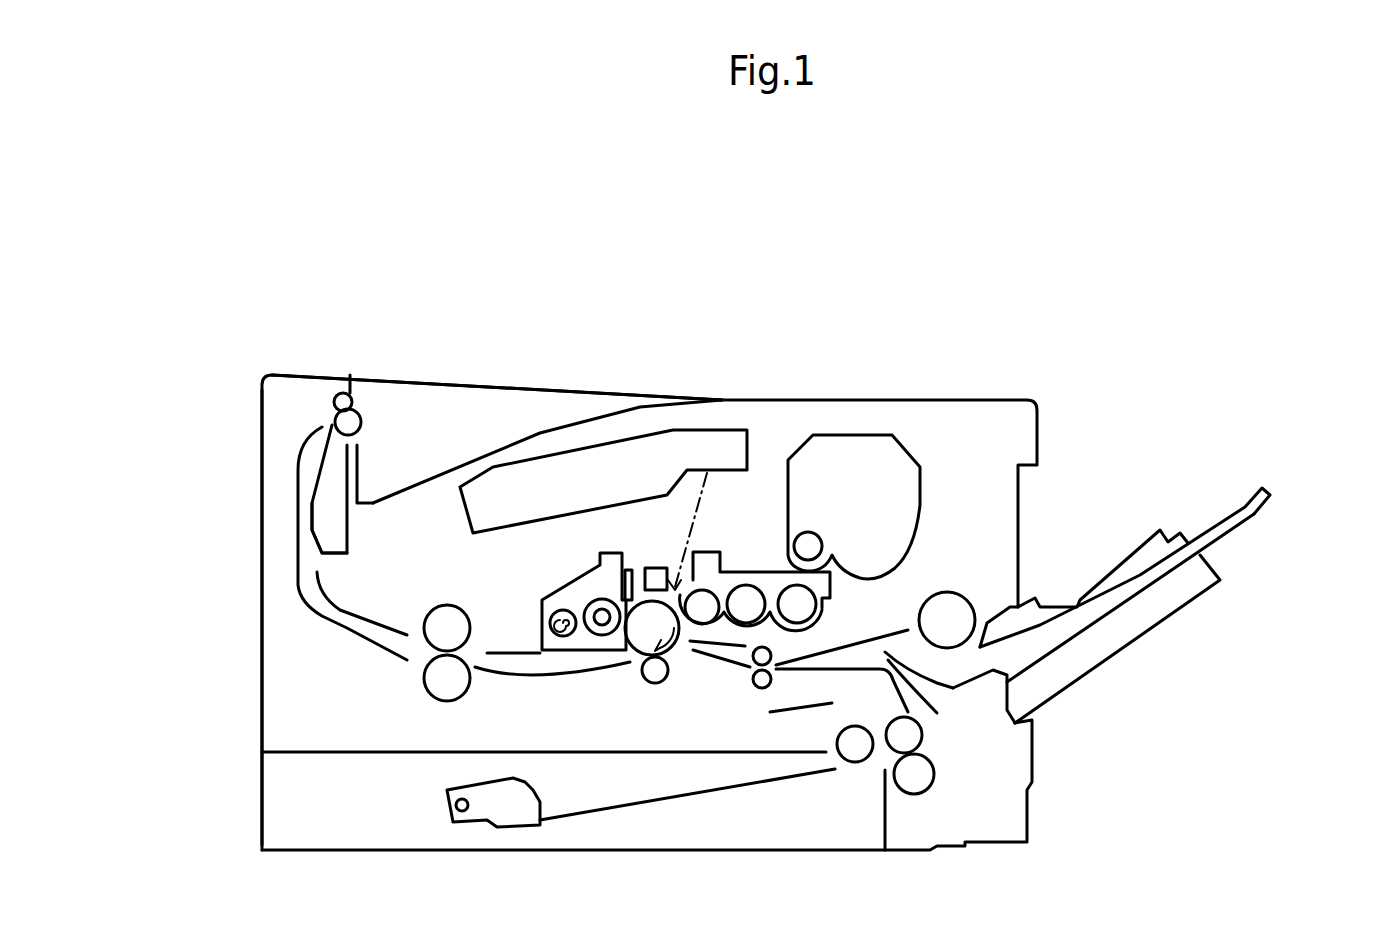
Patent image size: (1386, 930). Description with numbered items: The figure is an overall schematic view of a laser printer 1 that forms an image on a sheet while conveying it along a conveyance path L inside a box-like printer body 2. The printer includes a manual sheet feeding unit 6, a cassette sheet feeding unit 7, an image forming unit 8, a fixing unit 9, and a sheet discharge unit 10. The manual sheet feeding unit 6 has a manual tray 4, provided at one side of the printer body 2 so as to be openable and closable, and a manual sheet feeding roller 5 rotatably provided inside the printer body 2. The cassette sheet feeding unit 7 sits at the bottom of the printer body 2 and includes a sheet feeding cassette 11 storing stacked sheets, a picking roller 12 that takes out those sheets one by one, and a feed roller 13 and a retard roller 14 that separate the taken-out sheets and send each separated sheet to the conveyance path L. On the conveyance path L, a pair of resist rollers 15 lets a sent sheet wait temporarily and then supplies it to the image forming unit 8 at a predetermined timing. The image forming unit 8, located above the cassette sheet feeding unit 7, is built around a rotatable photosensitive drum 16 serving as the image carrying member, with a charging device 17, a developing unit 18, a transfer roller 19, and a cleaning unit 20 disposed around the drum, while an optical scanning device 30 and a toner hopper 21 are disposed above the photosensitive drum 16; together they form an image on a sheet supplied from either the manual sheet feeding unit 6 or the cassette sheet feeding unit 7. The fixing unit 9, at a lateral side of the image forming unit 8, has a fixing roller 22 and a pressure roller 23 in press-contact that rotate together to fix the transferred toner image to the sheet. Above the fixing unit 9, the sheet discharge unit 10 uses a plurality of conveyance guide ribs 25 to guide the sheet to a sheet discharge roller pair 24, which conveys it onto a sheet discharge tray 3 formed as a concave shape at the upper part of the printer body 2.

The laser printer 1 is at (701, 226).
The printer body 2 is at (262, 624).
The sheet discharge tray 3 is at (447, 462).
The manual tray 4 is at (1212, 522).
The manual sheet feeding roller 5 is at (953, 597).
The manual sheet feeding unit 6 is at (1128, 478).
The cassette sheet feeding unit 7 is at (955, 748).
The image forming unit 8 is at (726, 540).
The fixing unit 9 is at (407, 676).
The sheet discharge unit 10 is at (308, 398).
The sheet feeding cassette 11 is at (743, 786).
The picking roller 12 is at (857, 762).
The feed roller 13 is at (912, 737).
The retard roller 14 is at (930, 783).
The resist rollers 15 is at (773, 655).
The photosensitive drum 16 is at (675, 648).
The charging device 17 is at (655, 568).
The developing unit 18 is at (829, 608).
The transfer roller 19 is at (660, 684).
The cleaning unit 20 is at (548, 603).
The toner hopper 21 is at (855, 440).
The fixing roller 22 is at (447, 604).
The pressure roller 23 is at (435, 690).
The sheet discharge roller pair 24 is at (360, 412).
The conveyance guide ribs 25 is at (345, 540).
The optical scanning device 30 is at (583, 455).
The conveyance path L is at (545, 685).